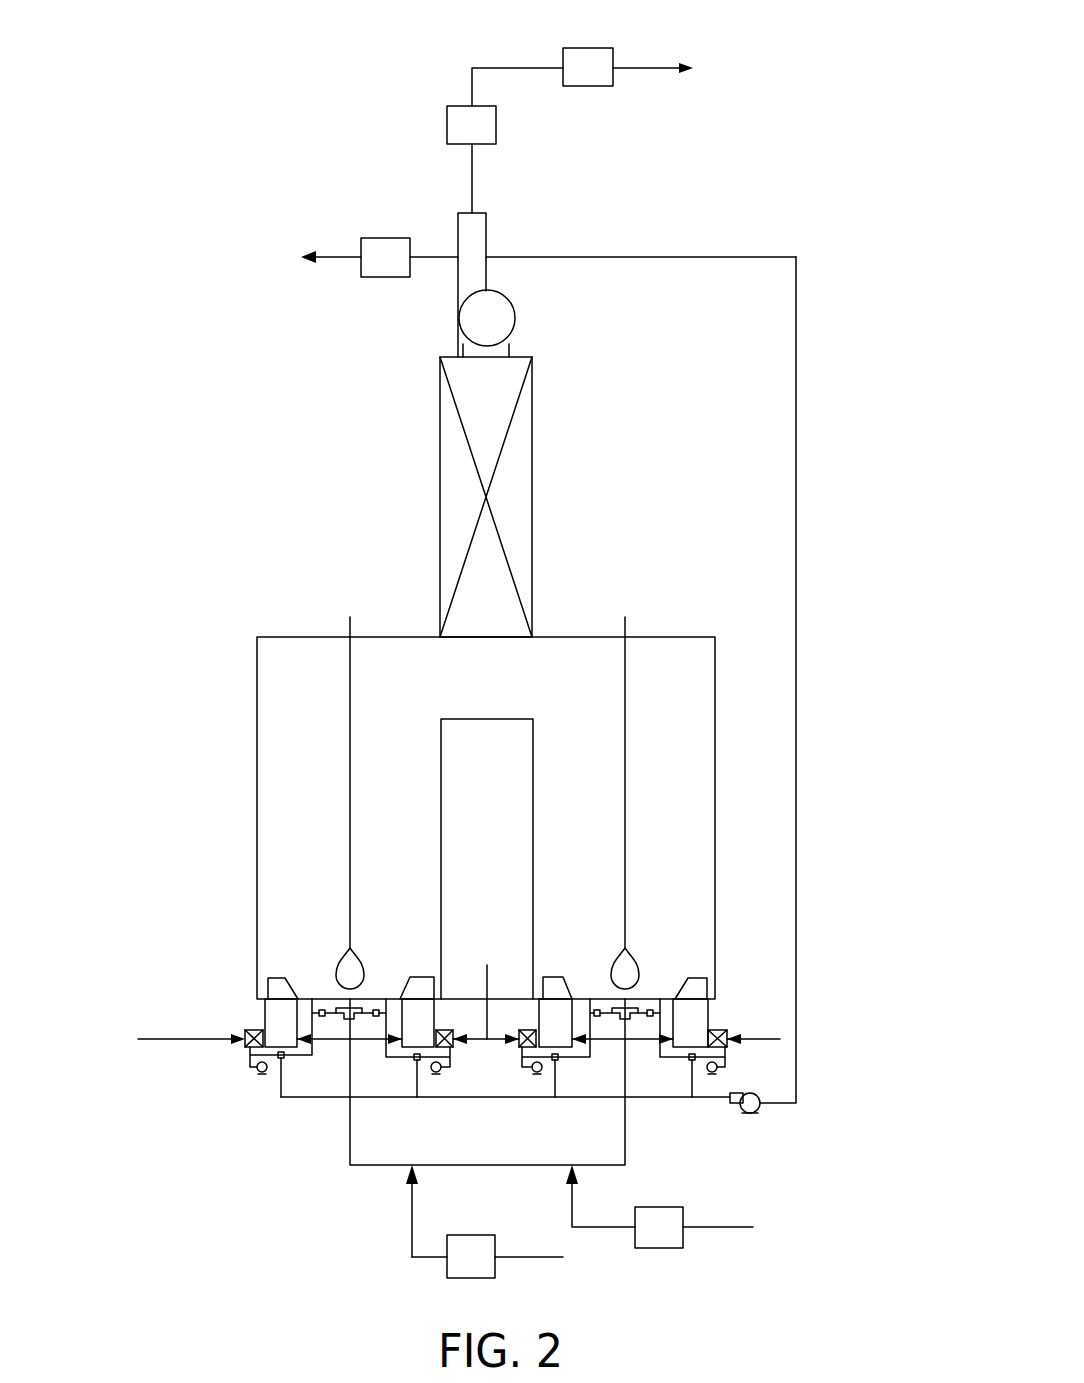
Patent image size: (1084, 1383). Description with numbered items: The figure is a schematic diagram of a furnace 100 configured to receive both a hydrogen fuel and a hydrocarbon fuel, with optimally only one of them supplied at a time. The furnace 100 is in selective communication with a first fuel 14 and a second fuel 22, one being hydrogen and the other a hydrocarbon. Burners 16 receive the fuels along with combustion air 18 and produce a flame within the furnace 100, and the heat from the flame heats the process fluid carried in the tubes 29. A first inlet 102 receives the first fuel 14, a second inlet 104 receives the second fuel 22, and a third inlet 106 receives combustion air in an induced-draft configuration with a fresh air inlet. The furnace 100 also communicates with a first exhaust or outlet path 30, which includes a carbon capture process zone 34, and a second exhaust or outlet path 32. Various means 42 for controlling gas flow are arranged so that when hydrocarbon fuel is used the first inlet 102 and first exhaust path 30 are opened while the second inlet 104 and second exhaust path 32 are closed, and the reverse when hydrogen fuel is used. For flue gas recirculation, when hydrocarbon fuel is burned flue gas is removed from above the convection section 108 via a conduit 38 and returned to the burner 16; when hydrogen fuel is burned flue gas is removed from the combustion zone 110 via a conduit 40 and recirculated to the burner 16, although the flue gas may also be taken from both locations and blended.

The first fuel 14 is at (727, 1222).
The burners 16 is at (276, 984).
The combustion air 18 is at (195, 1041).
The second fuel 22 is at (528, 1260).
The tubes 29 is at (345, 957).
The first exhaust or outlet path 30 is at (437, 258).
The second exhaust or outlet path 32 is at (474, 178).
The carbon capture process zone 34 is at (590, 47).
The conduit 38 is at (798, 496).
The conduit 40 is at (252, 1073).
The means for controlling gas flow 42 is at (465, 105).
The furnace 100 is at (289, 498).
The first inlet 102 is at (538, 1142).
The second inlet 104 is at (374, 1193).
The third inlet 106 is at (231, 1012).
The convection section 108 is at (578, 438).
The combustion zone 110 is at (258, 903).